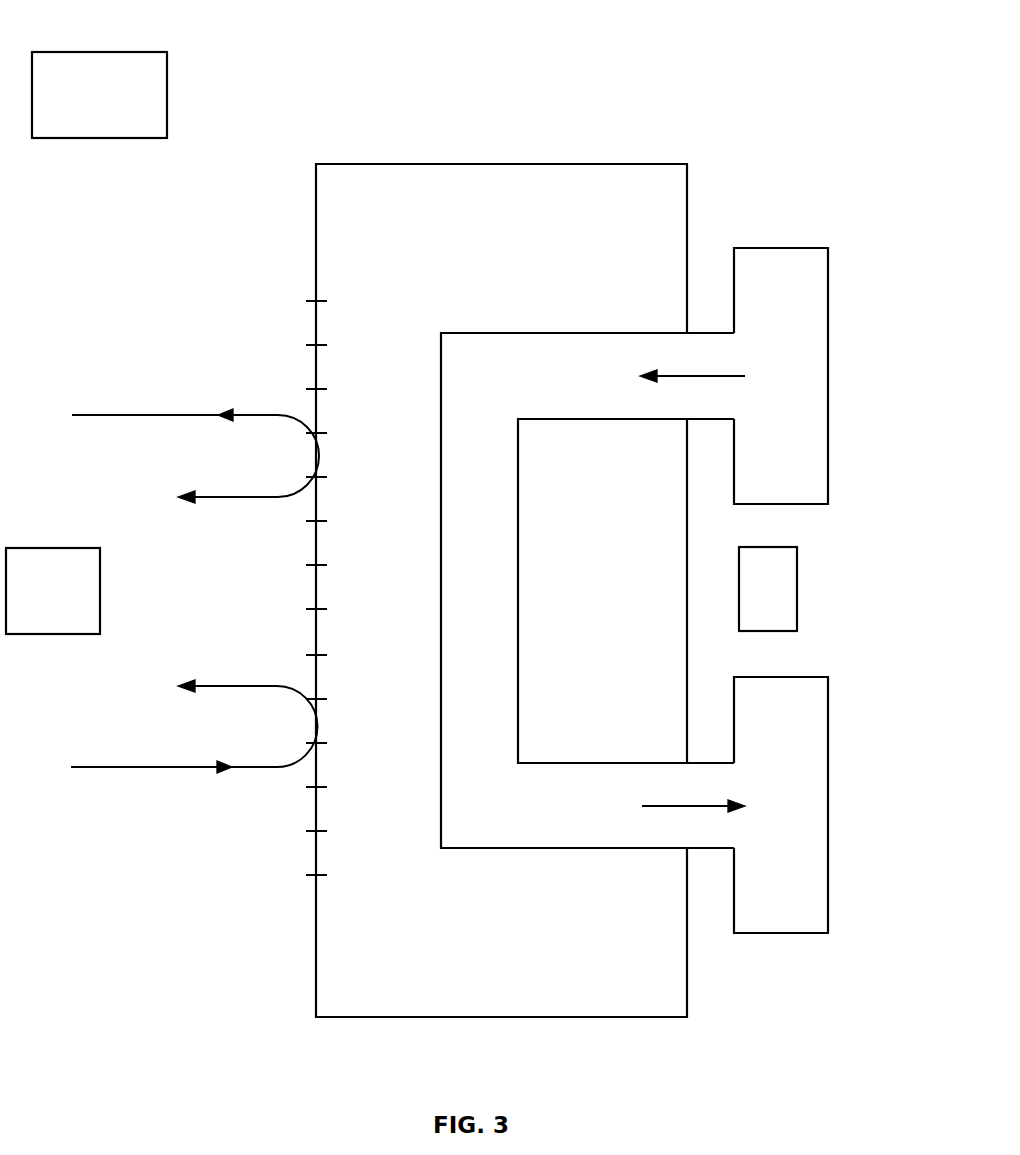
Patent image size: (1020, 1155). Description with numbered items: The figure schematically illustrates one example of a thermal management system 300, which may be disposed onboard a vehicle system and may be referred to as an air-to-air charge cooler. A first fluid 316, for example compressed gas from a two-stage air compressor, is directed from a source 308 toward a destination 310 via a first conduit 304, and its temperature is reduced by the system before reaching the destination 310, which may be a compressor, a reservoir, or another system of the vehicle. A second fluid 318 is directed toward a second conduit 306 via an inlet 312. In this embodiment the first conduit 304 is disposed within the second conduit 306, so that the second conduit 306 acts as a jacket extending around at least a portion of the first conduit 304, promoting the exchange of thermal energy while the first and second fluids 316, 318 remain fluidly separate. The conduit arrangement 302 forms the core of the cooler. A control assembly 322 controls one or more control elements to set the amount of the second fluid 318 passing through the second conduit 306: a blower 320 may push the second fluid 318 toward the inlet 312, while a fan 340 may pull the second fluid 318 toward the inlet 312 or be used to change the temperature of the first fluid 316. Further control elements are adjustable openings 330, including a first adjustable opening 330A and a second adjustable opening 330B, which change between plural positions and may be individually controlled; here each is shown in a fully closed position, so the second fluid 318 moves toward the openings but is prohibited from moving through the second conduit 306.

The thermal management system 300 is at (846, 52).
The gradient coil assembly 302 is at (738, 178).
The first conduit 304 is at (578, 333).
The second conduit 306 is at (527, 164).
The source 308 is at (782, 248).
The destination 310 is at (779, 933).
The inlet 312 is at (310, 389).
The first fluid 316 is at (694, 377).
The second fluid 318 is at (133, 415).
The blower 320 is at (52, 548).
The control assembly 322 is at (99, 95).
The adjustable openings 330 is at (315, 676).
The first adjustable opening 330A is at (315, 320).
The second adjustable opening 330B is at (316, 852).
The fan 340 is at (797, 580).